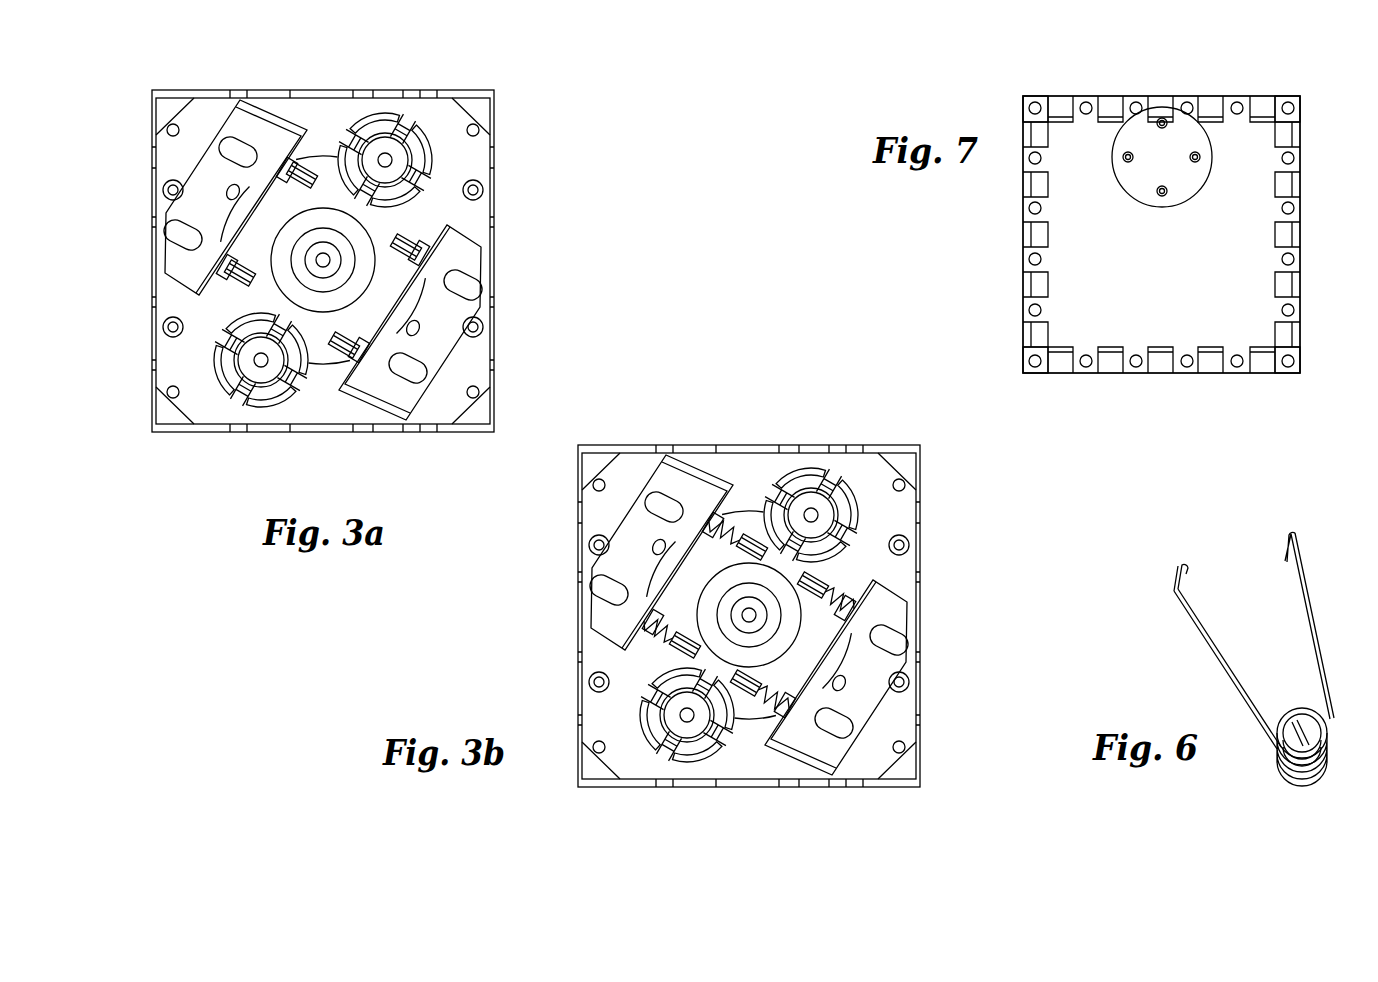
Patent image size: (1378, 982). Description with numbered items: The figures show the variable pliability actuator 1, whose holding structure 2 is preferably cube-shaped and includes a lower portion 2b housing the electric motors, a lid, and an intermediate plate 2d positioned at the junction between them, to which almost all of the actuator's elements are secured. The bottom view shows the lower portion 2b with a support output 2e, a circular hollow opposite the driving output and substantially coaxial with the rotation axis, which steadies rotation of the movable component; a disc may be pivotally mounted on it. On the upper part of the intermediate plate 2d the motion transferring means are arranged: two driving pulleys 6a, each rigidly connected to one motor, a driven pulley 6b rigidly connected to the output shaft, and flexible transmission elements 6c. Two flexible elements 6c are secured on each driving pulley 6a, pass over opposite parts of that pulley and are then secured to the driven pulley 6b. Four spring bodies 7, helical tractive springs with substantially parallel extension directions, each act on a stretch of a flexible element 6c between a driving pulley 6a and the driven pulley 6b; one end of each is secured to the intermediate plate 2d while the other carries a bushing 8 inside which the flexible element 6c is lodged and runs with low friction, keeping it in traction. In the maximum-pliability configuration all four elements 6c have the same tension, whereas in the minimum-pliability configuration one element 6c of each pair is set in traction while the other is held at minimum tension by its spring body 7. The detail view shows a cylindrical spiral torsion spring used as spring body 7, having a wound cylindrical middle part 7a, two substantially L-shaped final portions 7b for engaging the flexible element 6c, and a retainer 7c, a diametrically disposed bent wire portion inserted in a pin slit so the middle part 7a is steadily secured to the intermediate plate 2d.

In FIG. 3A, the variable pliability actuator 1 is at (381, 247).
In FIG. 3B, the variable pliability actuator 1 is at (695, 616).
In FIG. 7, the variable pliability actuator 1 is at (980, 265).
In FIG. 7, the holding structure 2 is at (1173, 204).
In FIG. 7, the lower portion 2b is at (1168, 284).
In FIG. 3A, the intermediate plate 2d is at (306, 228).
In FIG. 3B, the intermediate plate 2d is at (741, 591).
In FIG. 7, the support output 2e is at (1178, 170).
In FIG. 3A, the driving pulley 6a is at (276, 60).
In FIG. 3B, the driving pulley 6a is at (750, 620).
In FIG. 3A, the driven pulley 6b is at (414, 260).
In FIG. 3B, the driven pulley 6b is at (841, 615).
In FIG. 3A, the flexible transmission element 6c is at (352, 317).
In FIG. 3B, the flexible transmission element 6c is at (761, 668).
In FIG. 3A, the spring body 7 is at (317, 264).
In FIG. 3B, the spring body 7 is at (745, 618).
In FIG. 6, the spring body 7 is at (1266, 653).
In FIG. 6, the cylindrical middle part 7a is at (1327, 717).
In FIG. 6, the final portion 7b is at (1307, 623).
In FIG. 6, the retainer 7c is at (1297, 727).
In FIG. 3A, the bushing 8 is at (322, 260).
In FIG. 3B, the bushing 8 is at (749, 616).